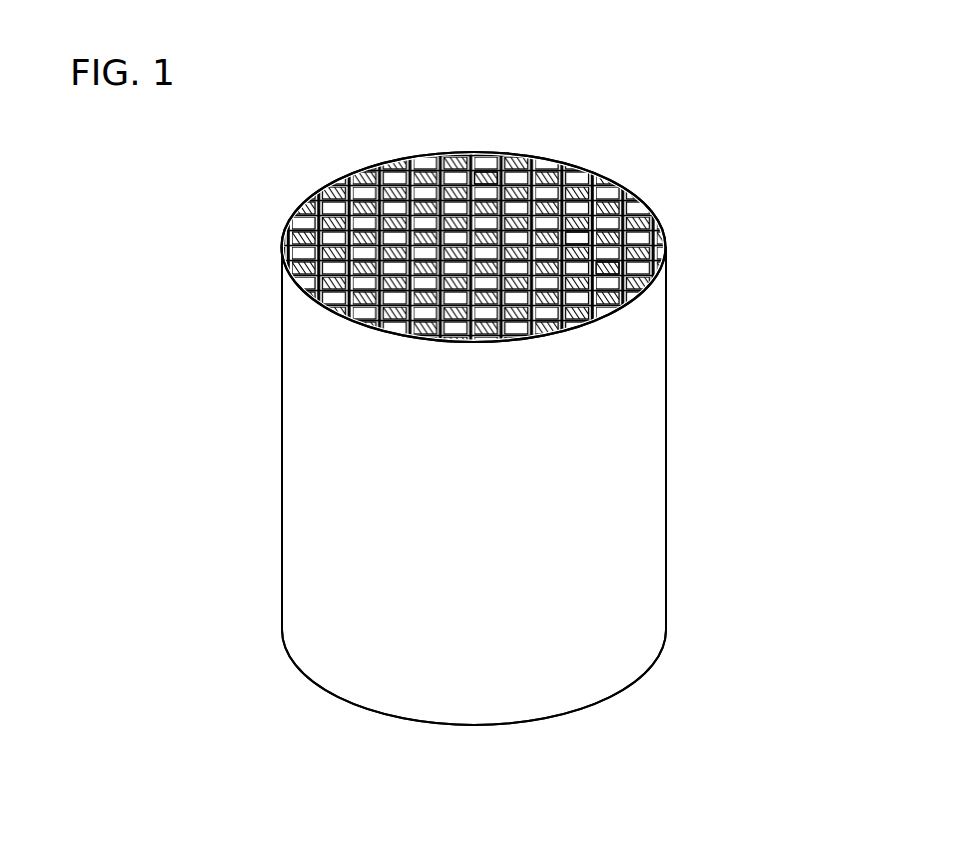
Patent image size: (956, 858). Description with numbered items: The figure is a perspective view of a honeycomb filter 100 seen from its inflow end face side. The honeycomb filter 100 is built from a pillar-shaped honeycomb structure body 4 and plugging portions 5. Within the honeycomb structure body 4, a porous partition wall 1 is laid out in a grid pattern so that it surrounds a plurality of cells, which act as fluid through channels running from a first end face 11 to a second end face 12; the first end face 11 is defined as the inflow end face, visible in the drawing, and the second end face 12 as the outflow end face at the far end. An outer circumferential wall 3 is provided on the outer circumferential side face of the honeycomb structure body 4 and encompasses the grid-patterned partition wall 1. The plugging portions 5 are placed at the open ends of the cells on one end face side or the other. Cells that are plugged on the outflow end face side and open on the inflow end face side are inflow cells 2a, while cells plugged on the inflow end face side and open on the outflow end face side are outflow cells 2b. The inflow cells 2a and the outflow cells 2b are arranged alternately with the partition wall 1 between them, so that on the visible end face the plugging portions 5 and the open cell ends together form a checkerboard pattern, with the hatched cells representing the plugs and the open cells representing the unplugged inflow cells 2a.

The honeycomb filter 100 is at (803, 102).
The partition wall 1 is at (563, 195).
The inflow cells 2a is at (580, 238).
The outflow cells 2b is at (620, 267).
The outer circumferential wall 3 is at (635, 380).
The honeycomb structure body 4 is at (677, 287).
The plugging portions 5 is at (493, 172).
The first end face 11 is at (357, 168).
The second end face 12 is at (308, 682).